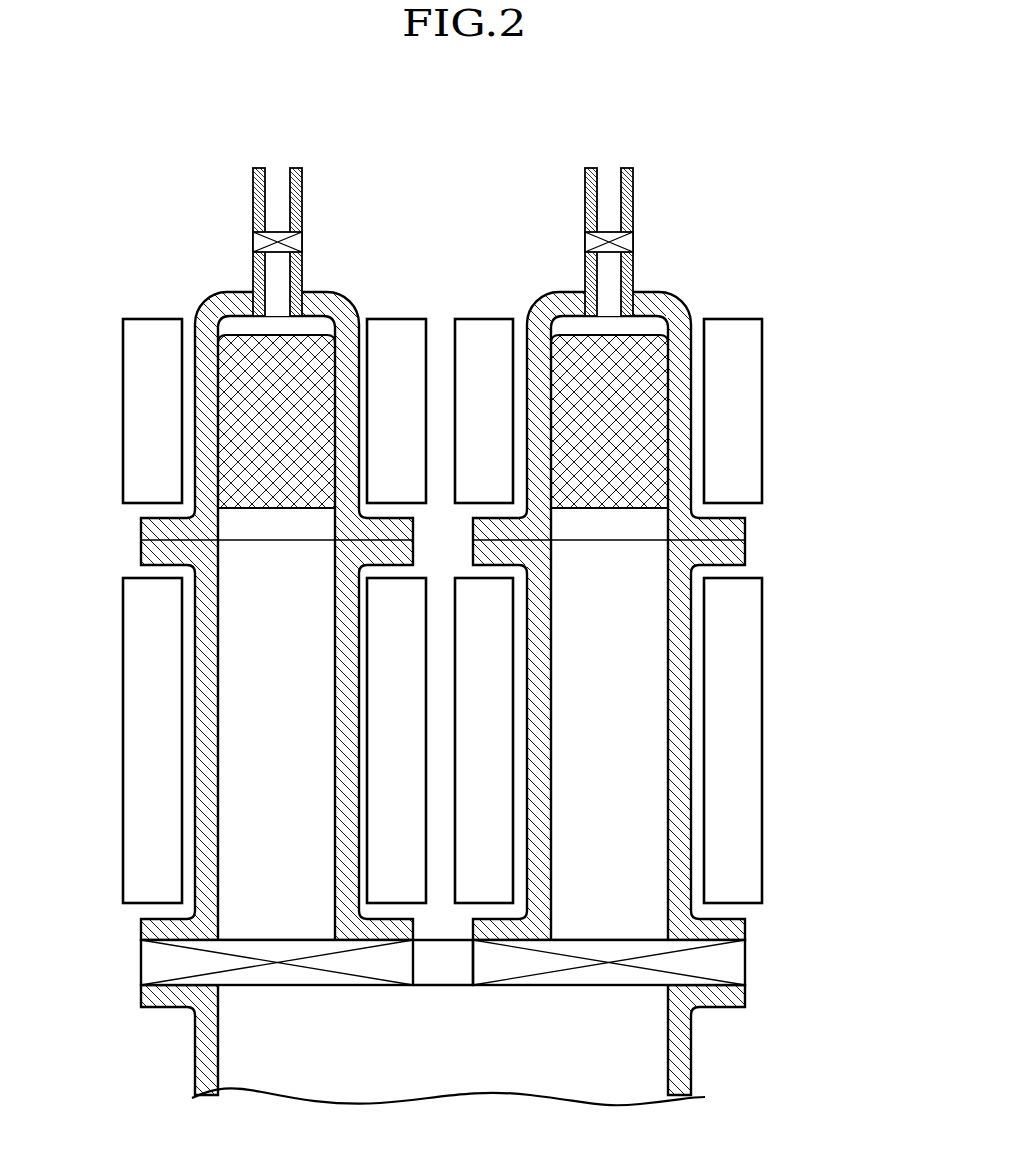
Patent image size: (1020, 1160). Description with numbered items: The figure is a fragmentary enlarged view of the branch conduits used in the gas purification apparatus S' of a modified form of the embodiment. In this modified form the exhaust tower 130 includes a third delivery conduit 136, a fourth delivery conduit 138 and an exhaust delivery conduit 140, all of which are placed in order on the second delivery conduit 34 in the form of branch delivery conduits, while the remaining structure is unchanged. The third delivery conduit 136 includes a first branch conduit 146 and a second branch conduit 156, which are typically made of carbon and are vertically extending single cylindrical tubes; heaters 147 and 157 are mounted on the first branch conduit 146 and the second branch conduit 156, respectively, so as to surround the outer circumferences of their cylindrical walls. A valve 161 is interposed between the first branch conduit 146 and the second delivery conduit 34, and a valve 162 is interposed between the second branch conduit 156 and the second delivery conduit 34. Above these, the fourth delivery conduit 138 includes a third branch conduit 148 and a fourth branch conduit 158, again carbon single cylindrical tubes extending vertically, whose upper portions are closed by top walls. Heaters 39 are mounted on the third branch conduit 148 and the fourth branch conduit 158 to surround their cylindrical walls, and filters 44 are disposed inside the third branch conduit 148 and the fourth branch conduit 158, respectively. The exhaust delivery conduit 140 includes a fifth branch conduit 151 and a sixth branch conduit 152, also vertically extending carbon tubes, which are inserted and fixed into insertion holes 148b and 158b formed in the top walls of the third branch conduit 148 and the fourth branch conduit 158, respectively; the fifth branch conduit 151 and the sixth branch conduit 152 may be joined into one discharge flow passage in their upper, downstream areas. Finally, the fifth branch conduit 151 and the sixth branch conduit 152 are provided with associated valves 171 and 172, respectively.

The exhaust delivery conduit 140 is at (511, 131).
The fifth branch conduit 151 is at (305, 192).
The sixth branch conduit 152 is at (585, 192).
The valve 171 is at (305, 243).
The valve 172 is at (586, 243).
The exhaust tower 130 is at (152, 282).
The filter 44 is at (208, 298).
The insertion hole 148b is at (228, 331).
The insertion hole 158b is at (588, 318).
The heater 39 is at (133, 363).
The fourth delivery conduit 138 is at (790, 402).
The third branch conduit 148 is at (205, 473).
The fourth branch conduit 158 is at (683, 488).
The heater 147 is at (130, 612).
The heater 157 is at (752, 614).
The third delivery conduit 136 is at (790, 692).
The first branch conduit 146 is at (205, 830).
The second branch conduit 156 is at (683, 830).
The valve 161 is at (150, 962).
The valve 162 is at (738, 962).
The second delivery conduit 34 is at (692, 1060).
The gas purification apparatus S' is at (762, 149).